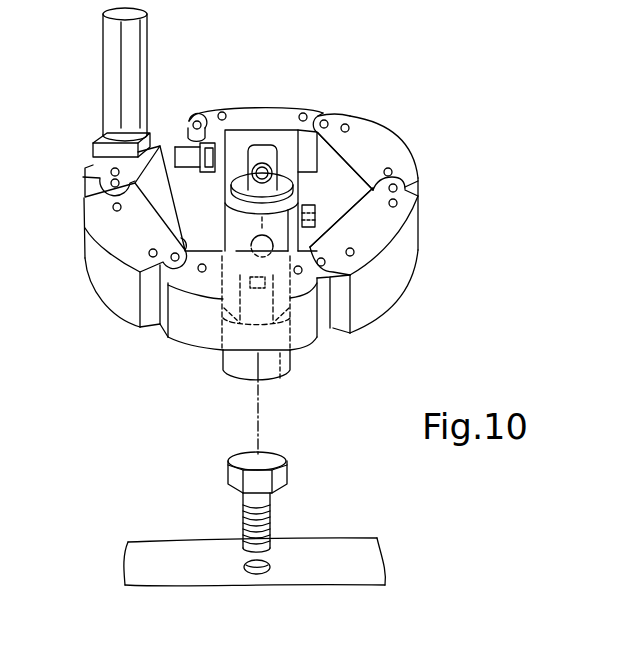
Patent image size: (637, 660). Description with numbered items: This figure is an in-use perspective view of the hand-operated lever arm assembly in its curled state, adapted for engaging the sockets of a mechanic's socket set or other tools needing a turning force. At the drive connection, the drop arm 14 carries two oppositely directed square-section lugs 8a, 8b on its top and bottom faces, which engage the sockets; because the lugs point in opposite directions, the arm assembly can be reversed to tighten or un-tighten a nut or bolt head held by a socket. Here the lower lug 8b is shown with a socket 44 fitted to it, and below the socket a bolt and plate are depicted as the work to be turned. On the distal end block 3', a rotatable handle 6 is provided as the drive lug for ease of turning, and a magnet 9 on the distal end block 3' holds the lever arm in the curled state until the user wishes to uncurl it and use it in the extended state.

The rotatable handle 6 is at (112, 53).
The distal end block 3' is at (118, 209).
The magnet 9 is at (180, 120).
The square-section lug 8a is at (260, 146).
The drop arm 14 is at (317, 159).
The square-section lug 8b is at (257, 284).
The socket 44 is at (272, 368).